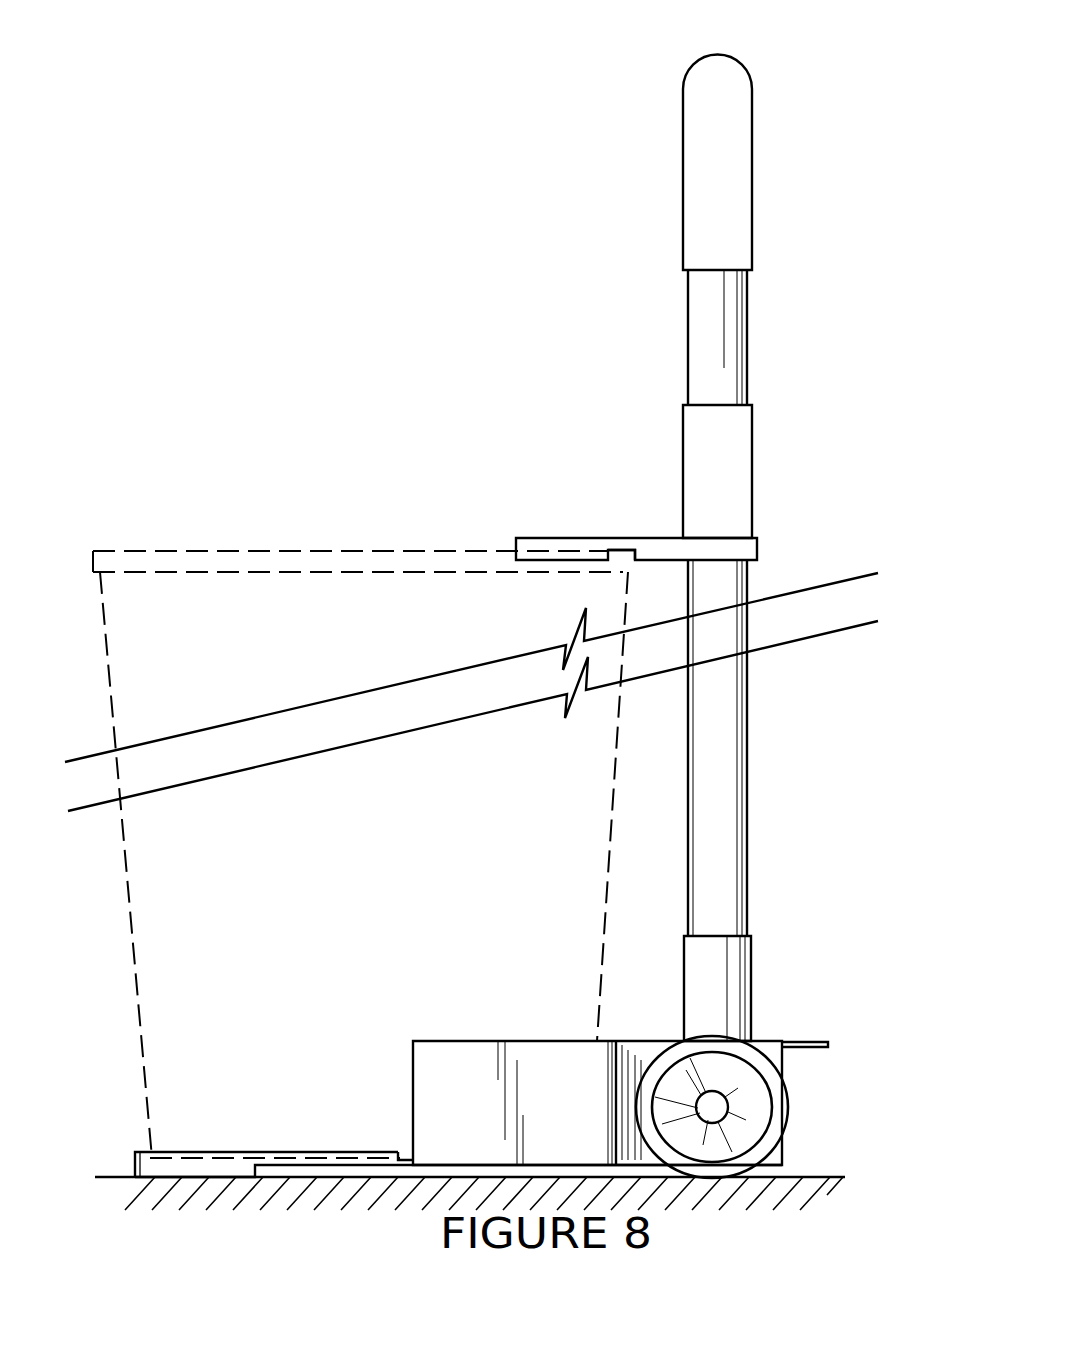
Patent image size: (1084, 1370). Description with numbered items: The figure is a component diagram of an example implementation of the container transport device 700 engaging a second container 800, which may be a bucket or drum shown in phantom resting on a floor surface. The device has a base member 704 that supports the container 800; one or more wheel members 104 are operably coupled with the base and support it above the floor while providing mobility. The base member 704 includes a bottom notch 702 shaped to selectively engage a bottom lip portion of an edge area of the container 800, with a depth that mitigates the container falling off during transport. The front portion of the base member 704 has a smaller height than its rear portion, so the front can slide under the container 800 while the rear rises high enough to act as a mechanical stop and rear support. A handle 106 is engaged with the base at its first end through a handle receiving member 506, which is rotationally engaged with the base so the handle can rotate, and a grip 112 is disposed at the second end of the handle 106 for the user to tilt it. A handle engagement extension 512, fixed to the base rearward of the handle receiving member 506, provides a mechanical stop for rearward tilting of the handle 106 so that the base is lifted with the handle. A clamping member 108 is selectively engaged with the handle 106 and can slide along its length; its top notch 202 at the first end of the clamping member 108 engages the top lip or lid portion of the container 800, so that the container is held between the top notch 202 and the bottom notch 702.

The container transport device 700 is at (792, 47).
The grip 112 is at (743, 195).
The handle 106 is at (732, 342).
The clamping member 108 is at (580, 538).
The top notch 202 is at (630, 558).
The second container 800 is at (391, 639).
The handle receiving member 506 is at (751, 951).
The handle engagement extension 512 is at (810, 1041).
The wheel member 104 is at (790, 1097).
The bottom notch 702 is at (678, 734).
The base member 704 is at (135, 1158).